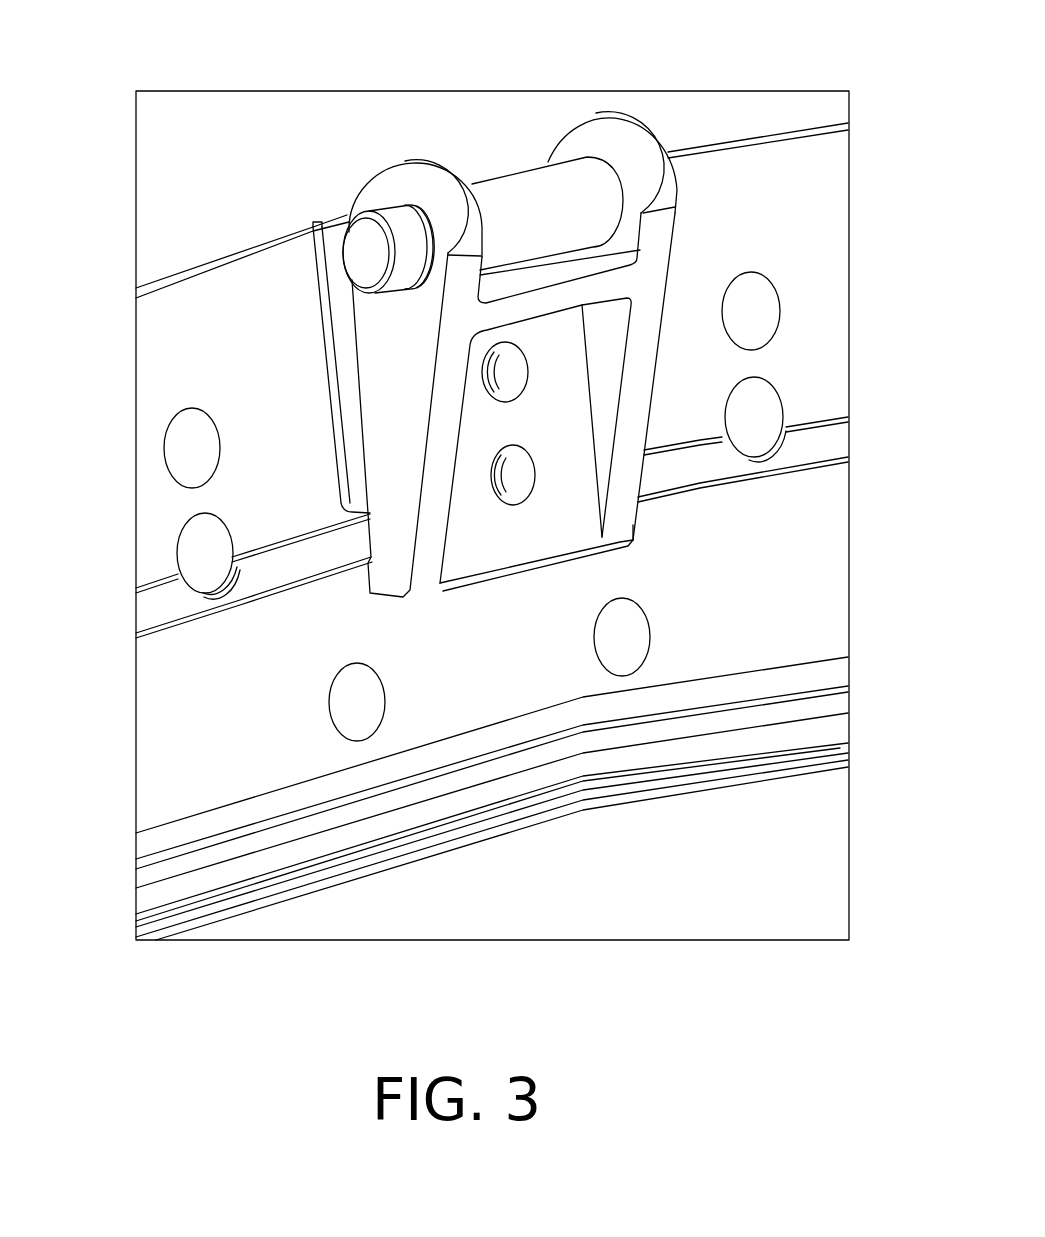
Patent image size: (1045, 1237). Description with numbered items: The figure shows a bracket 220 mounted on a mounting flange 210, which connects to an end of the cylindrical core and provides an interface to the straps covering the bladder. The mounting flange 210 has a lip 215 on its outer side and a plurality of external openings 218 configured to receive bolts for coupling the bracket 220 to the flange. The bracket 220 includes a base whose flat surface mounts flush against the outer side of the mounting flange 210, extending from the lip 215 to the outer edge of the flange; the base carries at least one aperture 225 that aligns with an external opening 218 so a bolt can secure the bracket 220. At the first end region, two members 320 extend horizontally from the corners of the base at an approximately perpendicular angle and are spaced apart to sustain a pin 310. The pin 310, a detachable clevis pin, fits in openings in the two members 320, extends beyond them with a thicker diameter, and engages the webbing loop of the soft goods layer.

The mounting flange 210 is at (162, 738).
The lip 215 is at (162, 610).
The external openings 218 is at (763, 397).
The bracket 220 is at (378, 384).
The aperture 225 is at (500, 463).
The pin 310 is at (357, 232).
The members 320 is at (418, 156).